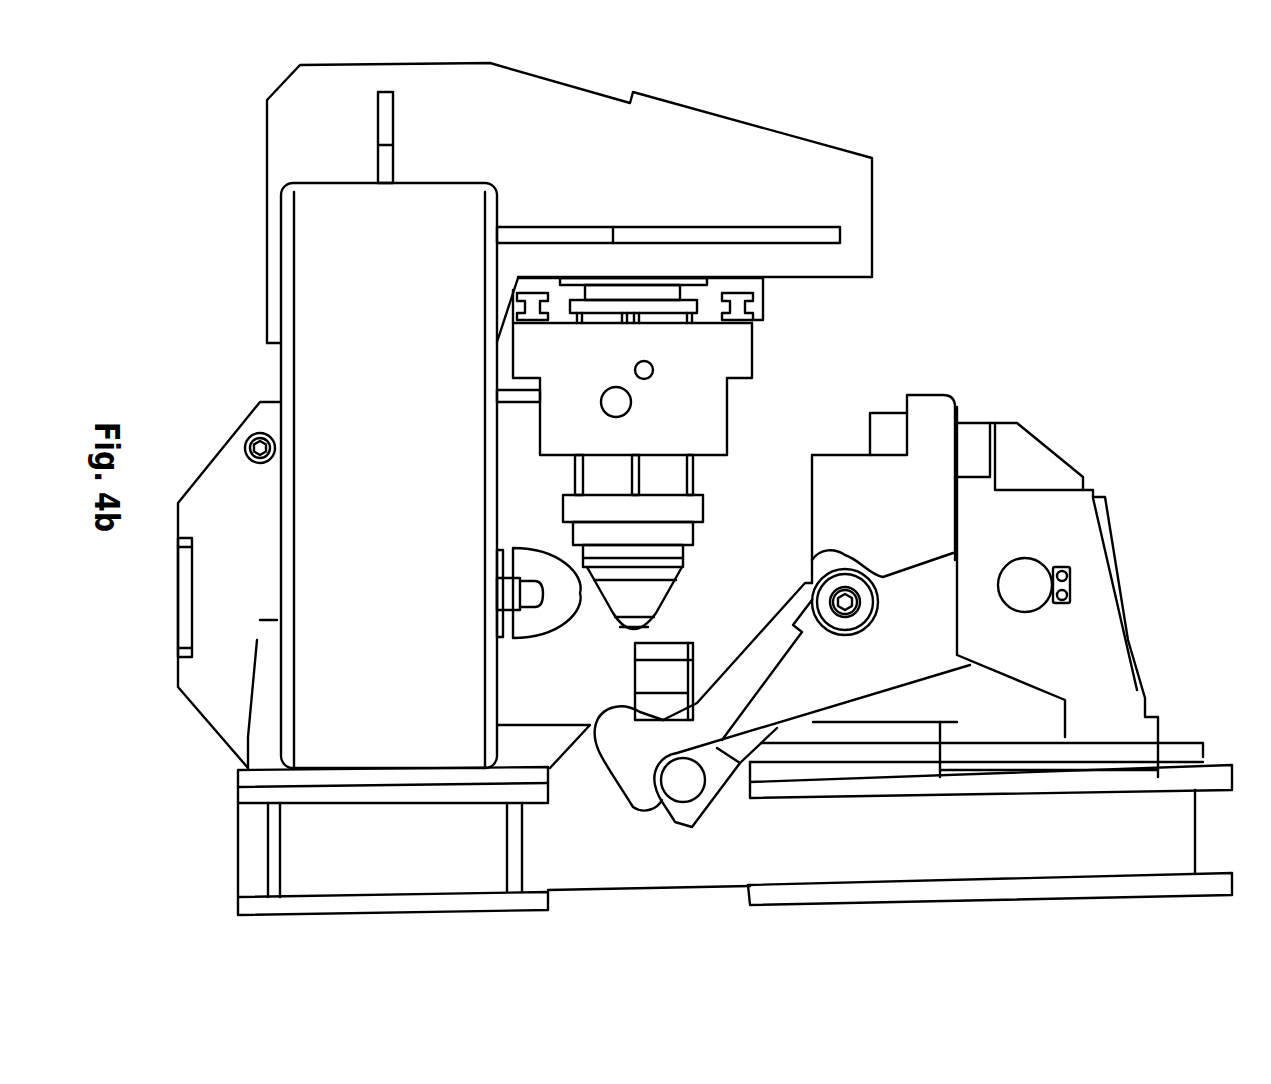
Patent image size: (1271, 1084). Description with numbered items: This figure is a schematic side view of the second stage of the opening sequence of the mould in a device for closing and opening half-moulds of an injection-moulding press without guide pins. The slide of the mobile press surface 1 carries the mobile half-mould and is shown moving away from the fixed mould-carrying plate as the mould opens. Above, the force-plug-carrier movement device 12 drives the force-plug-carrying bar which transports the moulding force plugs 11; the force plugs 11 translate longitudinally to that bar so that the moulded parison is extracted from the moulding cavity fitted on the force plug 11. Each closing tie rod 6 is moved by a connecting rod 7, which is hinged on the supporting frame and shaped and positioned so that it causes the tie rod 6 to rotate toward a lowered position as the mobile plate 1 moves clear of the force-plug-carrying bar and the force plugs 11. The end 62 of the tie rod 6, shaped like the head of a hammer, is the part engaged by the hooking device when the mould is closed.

The mobile press surface slide 1 is at (1095, 457).
The closing tie rod 6 is at (933, 587).
The connecting rod 7 is at (682, 813).
The force plug 11 is at (665, 570).
The force-plug-carrier movement device 12 is at (777, 160).
The hammer-head shaped end of tie rod 62 is at (618, 738).